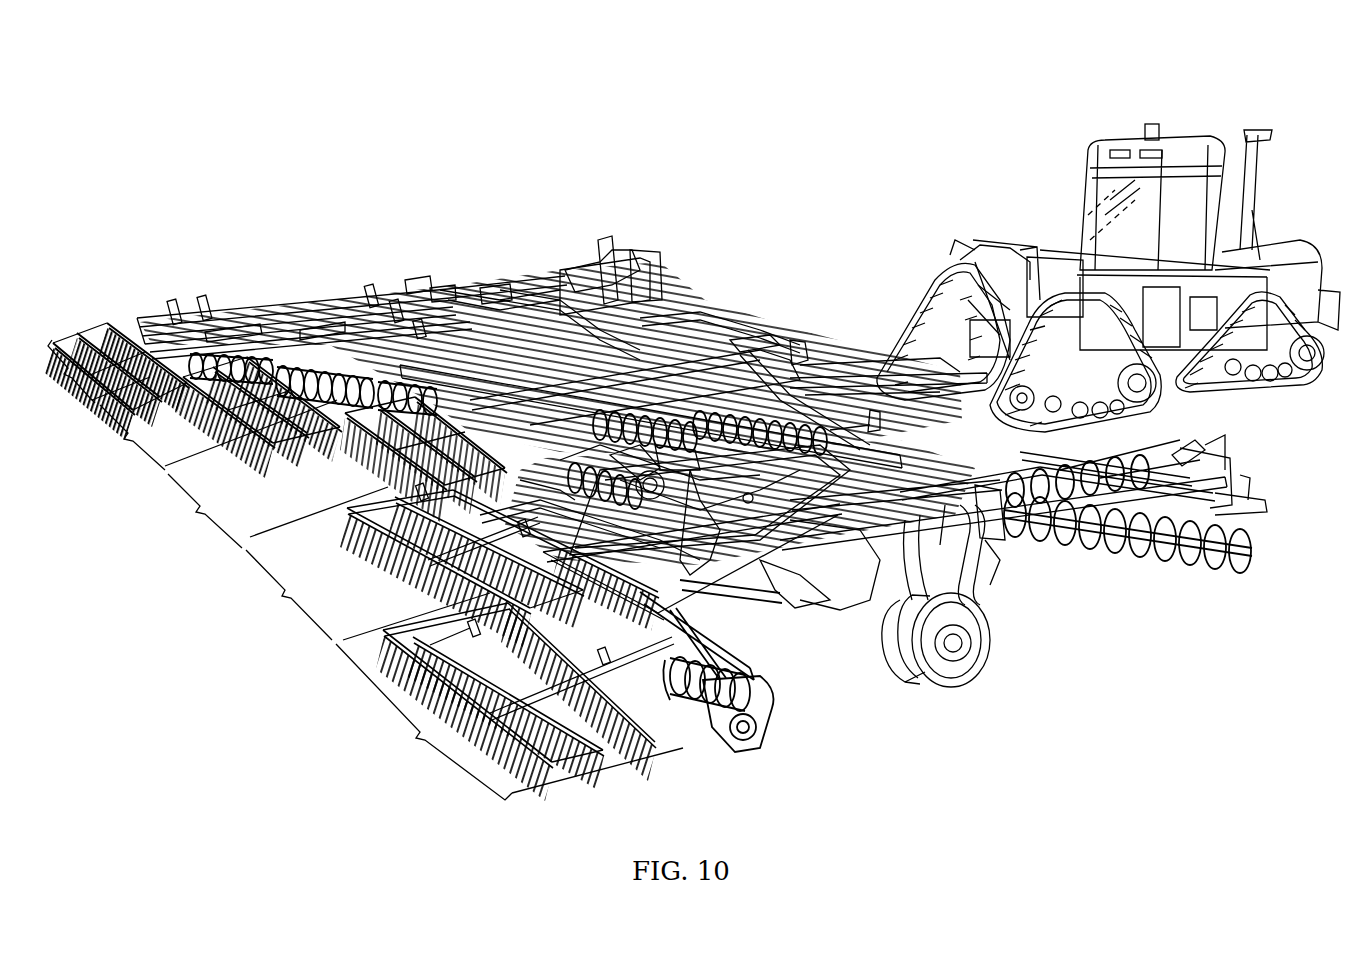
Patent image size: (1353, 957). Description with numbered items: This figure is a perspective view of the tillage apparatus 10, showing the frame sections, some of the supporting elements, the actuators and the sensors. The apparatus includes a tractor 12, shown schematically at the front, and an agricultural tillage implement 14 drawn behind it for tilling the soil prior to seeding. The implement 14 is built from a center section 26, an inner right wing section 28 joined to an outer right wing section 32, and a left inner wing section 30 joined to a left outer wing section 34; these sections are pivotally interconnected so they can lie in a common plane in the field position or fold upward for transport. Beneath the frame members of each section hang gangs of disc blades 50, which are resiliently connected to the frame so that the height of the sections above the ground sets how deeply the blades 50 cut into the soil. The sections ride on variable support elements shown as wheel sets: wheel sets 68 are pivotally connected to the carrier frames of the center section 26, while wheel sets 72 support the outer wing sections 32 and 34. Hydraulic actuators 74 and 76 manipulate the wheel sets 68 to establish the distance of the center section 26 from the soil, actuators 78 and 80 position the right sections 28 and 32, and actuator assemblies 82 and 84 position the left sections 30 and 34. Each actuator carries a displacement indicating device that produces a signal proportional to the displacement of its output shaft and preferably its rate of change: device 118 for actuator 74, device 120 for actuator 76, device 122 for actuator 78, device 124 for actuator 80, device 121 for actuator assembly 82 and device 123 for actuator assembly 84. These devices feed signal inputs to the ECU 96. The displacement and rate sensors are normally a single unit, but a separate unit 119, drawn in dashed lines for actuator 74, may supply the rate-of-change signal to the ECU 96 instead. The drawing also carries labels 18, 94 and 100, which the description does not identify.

The tillage apparatus 10 is at (240, 97).
The tractor 12 is at (1125, 135).
The agricultural tillage implement 14 is at (296, 298).
The hitch assembly 18 is at (866, 384).
The center section 26 is at (335, 472).
The inner right wing section 28 is at (213, 417).
The left inner wing section 30 is at (452, 565).
The outer right wing section 32 is at (110, 381).
The left outer wing section 34 is at (509, 702).
The gangs of disc blades 50 is at (228, 312).
The wheel sets 68 is at (703, 538).
The wheel sets 72 is at (985, 670).
The hydraulic actuator 74 is at (750, 350).
The hydraulic actuator 76 is at (630, 268).
The actuator 78 is at (511, 290).
The actuator 80 is at (438, 290).
The actuator assembly 82 is at (880, 522).
The actuator assembly 84 is at (1030, 510).
The controller 94 is at (1080, 230).
The ECU 96 is at (1090, 196).
The engine 100 is at (1278, 235).
The displacement indicating device 118 is at (730, 332).
The separate unit 119 is at (676, 322).
The displacement indicating device 120 is at (580, 270).
The displacement indicating device 121 is at (875, 418).
The displacement indicating device 122 is at (493, 290).
The displacement indicating device 123 is at (1000, 535).
The displacement indicating device 124 is at (418, 286).